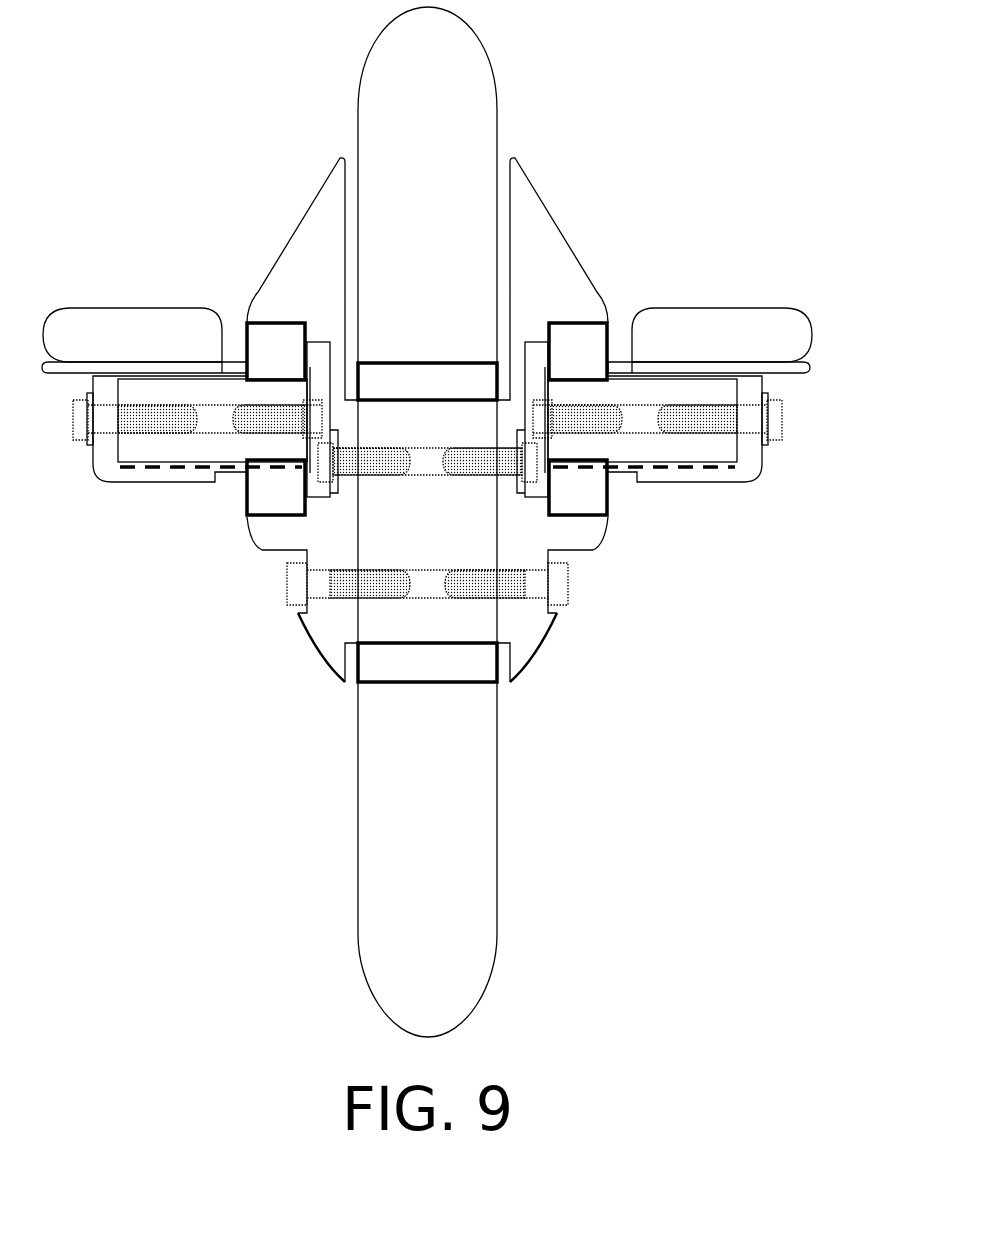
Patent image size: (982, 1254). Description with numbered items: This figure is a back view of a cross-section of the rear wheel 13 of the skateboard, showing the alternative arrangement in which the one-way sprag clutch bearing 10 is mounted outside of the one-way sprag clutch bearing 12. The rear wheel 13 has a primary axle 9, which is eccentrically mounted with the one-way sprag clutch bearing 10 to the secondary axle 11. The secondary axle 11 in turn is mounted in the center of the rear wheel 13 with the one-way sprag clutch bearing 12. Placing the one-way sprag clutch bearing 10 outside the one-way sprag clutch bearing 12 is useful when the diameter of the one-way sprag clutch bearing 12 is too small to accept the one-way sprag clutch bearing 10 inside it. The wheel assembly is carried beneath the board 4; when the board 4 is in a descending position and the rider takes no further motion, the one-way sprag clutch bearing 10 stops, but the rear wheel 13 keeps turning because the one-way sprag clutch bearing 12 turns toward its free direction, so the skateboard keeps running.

The board 4 is at (167, 332).
The primary axle 9 is at (645, 445).
The one-way sprag clutch bearing 10 is at (582, 488).
The secondary axle 11 is at (438, 430).
The one-way sprag clutch bearing 12 is at (440, 667).
The rear wheel 13 is at (463, 77).